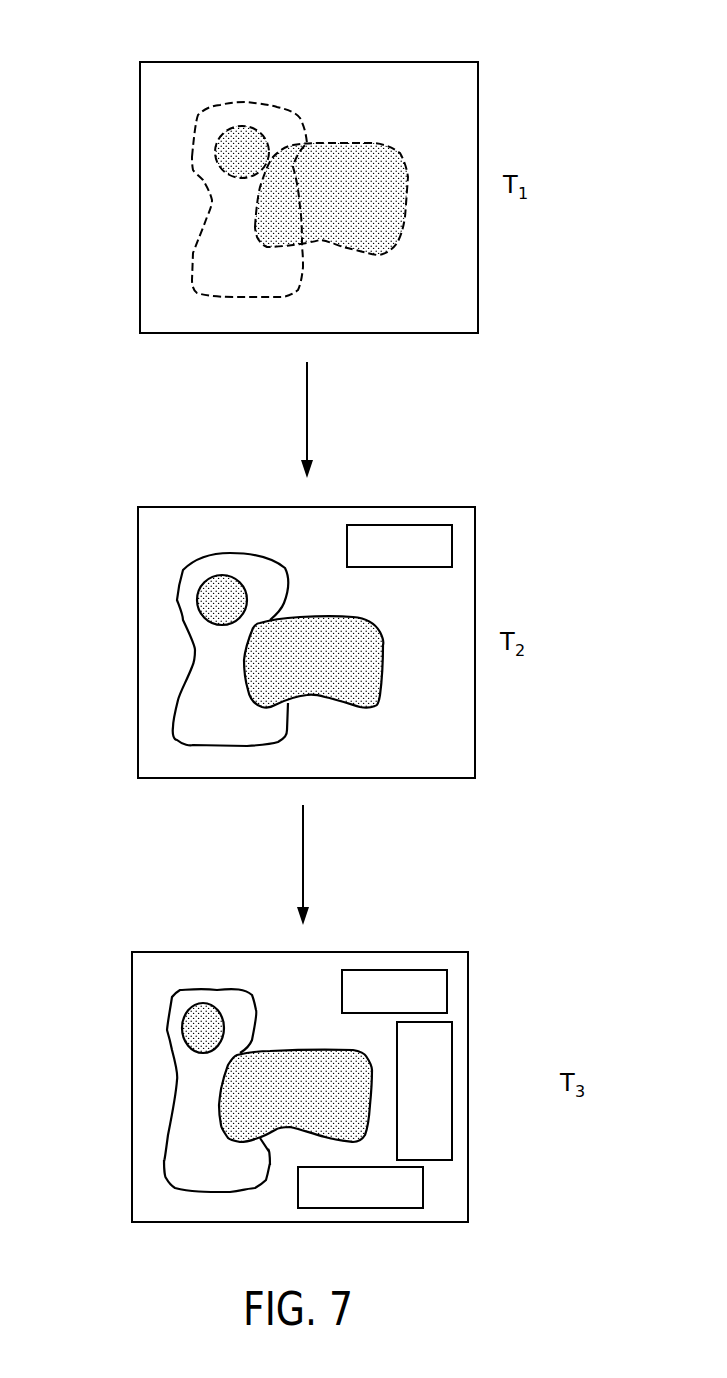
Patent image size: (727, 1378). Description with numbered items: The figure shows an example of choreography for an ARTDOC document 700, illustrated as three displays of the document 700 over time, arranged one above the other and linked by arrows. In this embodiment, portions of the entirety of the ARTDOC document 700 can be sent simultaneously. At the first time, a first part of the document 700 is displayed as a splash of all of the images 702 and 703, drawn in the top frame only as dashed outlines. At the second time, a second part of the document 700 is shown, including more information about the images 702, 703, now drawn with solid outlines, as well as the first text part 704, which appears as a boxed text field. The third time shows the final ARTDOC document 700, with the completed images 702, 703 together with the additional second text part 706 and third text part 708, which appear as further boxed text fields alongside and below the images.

The ARTDOC document 700 is at (308, 62).
The image 702 is at (207, 268).
The image 703 is at (382, 197).
The text part 1 704 is at (397, 525).
The text part 2 706 is at (452, 1092).
The text part 3 708 is at (423, 1188).